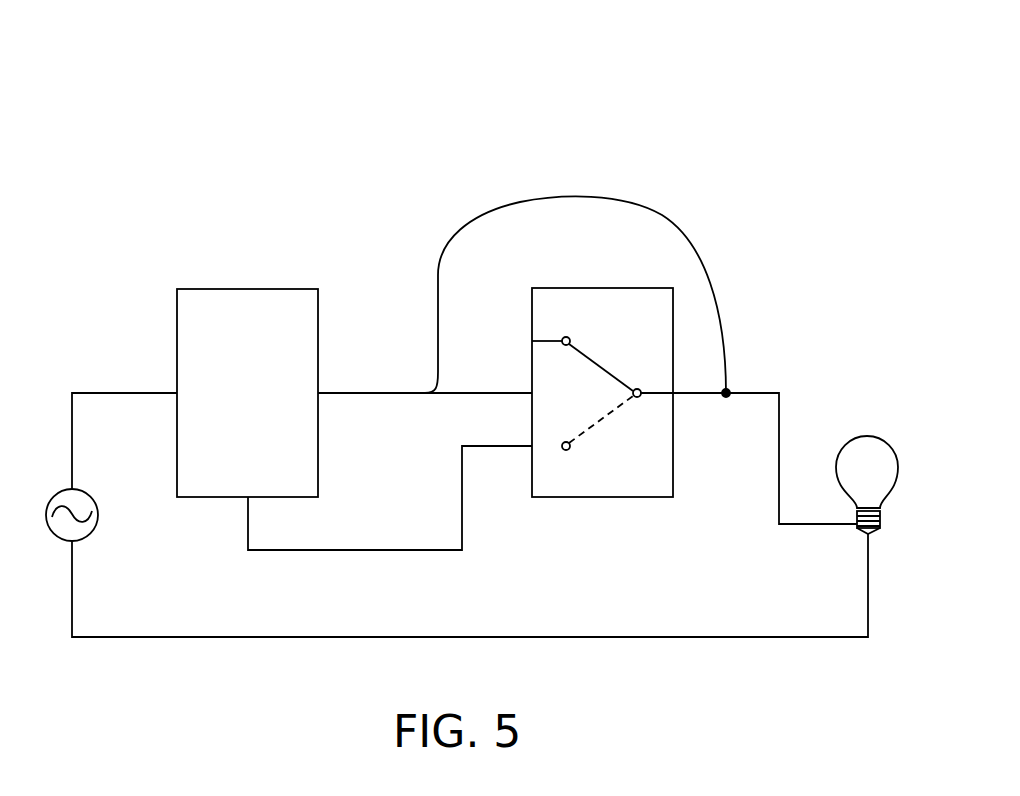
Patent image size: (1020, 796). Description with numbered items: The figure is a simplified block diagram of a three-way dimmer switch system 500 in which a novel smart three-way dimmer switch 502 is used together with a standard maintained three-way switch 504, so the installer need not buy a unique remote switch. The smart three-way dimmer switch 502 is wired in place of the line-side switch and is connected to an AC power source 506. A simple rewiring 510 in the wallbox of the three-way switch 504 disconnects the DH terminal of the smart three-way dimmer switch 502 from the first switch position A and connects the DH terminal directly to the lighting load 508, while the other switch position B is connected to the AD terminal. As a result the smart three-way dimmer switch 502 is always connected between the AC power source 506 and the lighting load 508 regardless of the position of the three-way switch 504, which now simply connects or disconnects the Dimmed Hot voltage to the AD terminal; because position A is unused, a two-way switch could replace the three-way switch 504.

The three-way dimmer switch system 500 is at (412, 98).
The smart three-way dimmer switch 502 is at (237, 289).
The three-way switch 504 is at (567, 288).
The AC power source 506 is at (88, 538).
The lighting load 508 is at (873, 438).
The rewiring 510 is at (674, 226).